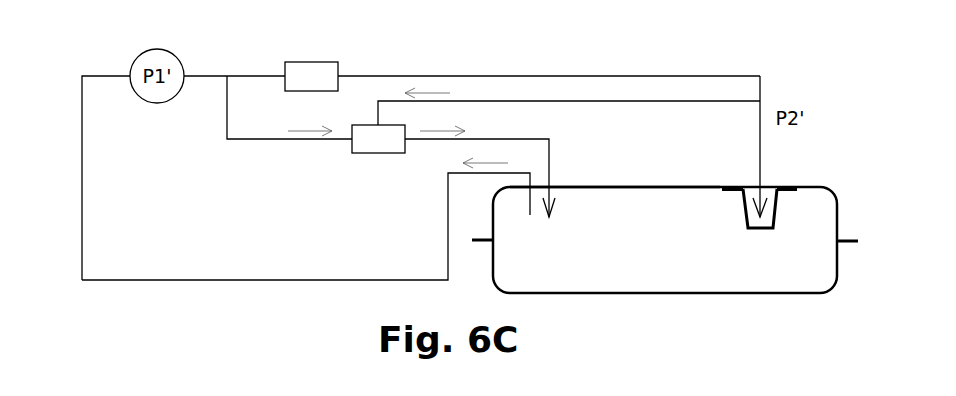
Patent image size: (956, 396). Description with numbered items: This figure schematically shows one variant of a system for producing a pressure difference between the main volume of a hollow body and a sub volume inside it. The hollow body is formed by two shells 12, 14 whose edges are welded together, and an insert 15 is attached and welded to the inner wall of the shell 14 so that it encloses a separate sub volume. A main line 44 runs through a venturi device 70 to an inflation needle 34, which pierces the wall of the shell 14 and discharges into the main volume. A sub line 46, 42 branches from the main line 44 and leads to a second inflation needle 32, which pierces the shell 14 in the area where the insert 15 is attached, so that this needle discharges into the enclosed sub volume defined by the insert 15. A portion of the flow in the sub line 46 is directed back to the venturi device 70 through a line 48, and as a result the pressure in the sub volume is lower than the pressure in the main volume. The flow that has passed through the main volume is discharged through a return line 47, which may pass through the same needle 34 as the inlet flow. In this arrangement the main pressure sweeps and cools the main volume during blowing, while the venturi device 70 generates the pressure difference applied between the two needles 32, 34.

The shell 12 is at (663, 295).
The shell 14 is at (622, 187).
The insert 15 is at (740, 205).
The inflation needle 32 is at (762, 186).
The inflation needle 34 is at (550, 187).
The sub line 42 is at (758, 156).
The main line 44 is at (247, 140).
The sub line 46 is at (610, 75).
The return line 47 is at (447, 220).
The line 48 is at (578, 101).
The venturi device 70 is at (341, 164).